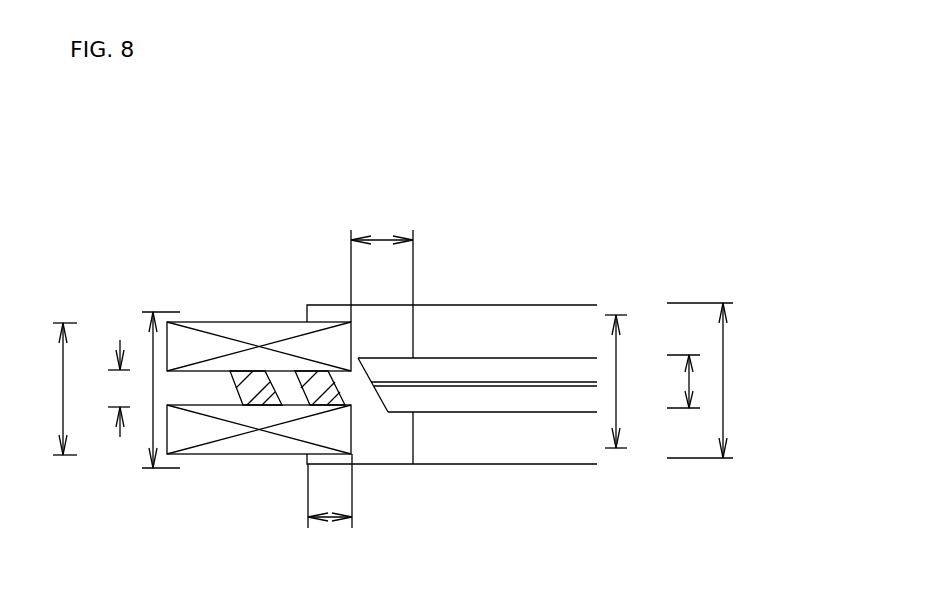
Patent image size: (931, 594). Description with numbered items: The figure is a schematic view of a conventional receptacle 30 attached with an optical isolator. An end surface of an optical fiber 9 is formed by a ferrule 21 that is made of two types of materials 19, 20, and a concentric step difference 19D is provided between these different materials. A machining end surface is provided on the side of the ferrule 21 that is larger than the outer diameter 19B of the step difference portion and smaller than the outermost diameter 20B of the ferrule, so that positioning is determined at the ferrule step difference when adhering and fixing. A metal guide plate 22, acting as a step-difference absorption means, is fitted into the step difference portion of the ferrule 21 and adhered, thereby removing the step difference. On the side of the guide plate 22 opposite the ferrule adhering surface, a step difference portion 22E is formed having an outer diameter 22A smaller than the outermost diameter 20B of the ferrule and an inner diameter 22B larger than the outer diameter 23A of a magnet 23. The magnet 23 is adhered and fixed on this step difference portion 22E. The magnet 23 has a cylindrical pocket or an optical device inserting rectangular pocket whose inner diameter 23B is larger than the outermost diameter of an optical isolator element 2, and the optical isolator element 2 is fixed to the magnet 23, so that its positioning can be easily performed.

The receptacle 30 is at (420, 150).
The material 20 is at (457, 332).
The guide plate 22 is at (381, 446).
The ferrule 21 is at (504, 283).
The material 19 is at (513, 370).
The optical fiber 9 is at (520, 384).
The magnet 23 is at (258, 443).
The optical isolator element 2 is at (232, 397).
The concentric step difference 19D is at (382, 263).
The step difference portion 22E is at (330, 507).
The outer diameter 22A is at (153, 360).
The outer diameter 23A is at (46, 389).
The inner diameter 23B is at (100, 388).
The inner diameter 22B is at (635, 381).
The outermost diameter 20B is at (719, 380).
The outer diameter 19B is at (690, 380).